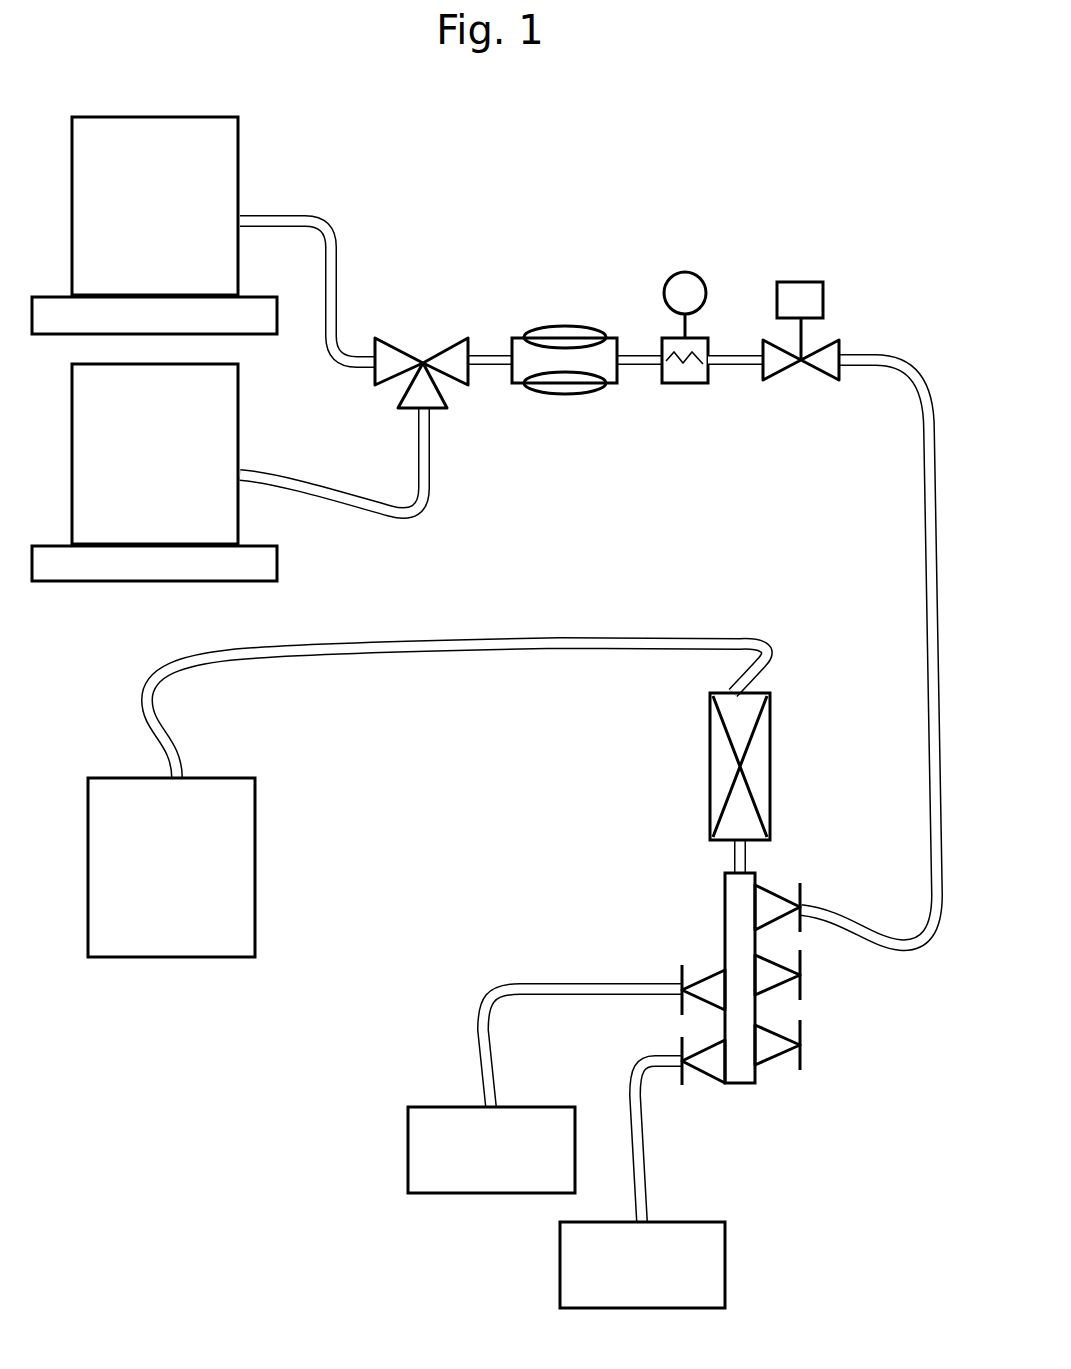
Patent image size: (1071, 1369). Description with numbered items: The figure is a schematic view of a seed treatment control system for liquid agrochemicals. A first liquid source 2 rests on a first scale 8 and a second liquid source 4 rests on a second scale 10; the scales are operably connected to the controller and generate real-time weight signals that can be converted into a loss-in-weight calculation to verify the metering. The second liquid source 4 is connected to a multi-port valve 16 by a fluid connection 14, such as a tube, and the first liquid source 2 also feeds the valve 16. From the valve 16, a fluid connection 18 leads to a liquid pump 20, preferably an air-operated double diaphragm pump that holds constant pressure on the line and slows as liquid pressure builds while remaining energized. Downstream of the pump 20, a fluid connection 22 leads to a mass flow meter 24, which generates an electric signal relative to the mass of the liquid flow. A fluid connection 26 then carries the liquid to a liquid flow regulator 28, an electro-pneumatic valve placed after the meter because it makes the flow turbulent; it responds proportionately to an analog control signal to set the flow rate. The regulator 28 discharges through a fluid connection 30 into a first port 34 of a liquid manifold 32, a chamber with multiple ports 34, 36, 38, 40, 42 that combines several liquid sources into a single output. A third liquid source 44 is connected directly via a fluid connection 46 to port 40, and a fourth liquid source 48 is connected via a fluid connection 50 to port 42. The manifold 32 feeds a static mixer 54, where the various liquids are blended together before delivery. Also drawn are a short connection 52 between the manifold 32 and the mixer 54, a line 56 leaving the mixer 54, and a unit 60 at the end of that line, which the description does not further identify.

The first liquid source 2 is at (145, 209).
The second liquid source 4 is at (145, 466).
The first scale 8 is at (145, 327).
The second scale 10 is at (138, 575).
The fluid connection 14 is at (324, 490).
The multi-port valve 16 is at (426, 350).
The fluid connection 18 is at (487, 358).
The liquid pump 20 is at (596, 330).
The fluid connection 22 is at (643, 357).
The mass flow meter 24 is at (696, 272).
The fluid connection 26 is at (745, 357).
The liquid flow regulator 28 is at (825, 280).
The fluid connection 30 is at (925, 492).
The liquid manifold 32 is at (745, 1085).
The first port 34 is at (768, 892).
The port 36 is at (768, 962).
The port 38 is at (768, 1033).
The port 40 is at (710, 1080).
The port 42 is at (712, 972).
The third liquid source 44 is at (627, 1281).
The fluid connection 46 is at (640, 1183).
The fourth liquid source 48 is at (475, 1166).
The fluid connection 50 is at (567, 985).
The connecting line 52 is at (738, 858).
The static mixer 54 is at (772, 720).
The return line 56 is at (552, 640).
The analysis unit 60 is at (155, 882).